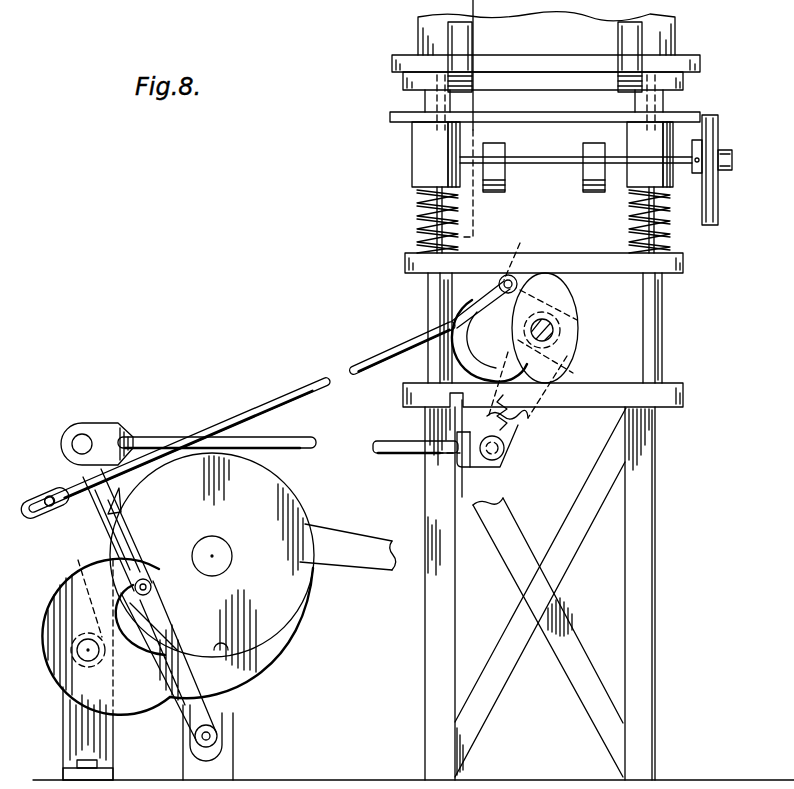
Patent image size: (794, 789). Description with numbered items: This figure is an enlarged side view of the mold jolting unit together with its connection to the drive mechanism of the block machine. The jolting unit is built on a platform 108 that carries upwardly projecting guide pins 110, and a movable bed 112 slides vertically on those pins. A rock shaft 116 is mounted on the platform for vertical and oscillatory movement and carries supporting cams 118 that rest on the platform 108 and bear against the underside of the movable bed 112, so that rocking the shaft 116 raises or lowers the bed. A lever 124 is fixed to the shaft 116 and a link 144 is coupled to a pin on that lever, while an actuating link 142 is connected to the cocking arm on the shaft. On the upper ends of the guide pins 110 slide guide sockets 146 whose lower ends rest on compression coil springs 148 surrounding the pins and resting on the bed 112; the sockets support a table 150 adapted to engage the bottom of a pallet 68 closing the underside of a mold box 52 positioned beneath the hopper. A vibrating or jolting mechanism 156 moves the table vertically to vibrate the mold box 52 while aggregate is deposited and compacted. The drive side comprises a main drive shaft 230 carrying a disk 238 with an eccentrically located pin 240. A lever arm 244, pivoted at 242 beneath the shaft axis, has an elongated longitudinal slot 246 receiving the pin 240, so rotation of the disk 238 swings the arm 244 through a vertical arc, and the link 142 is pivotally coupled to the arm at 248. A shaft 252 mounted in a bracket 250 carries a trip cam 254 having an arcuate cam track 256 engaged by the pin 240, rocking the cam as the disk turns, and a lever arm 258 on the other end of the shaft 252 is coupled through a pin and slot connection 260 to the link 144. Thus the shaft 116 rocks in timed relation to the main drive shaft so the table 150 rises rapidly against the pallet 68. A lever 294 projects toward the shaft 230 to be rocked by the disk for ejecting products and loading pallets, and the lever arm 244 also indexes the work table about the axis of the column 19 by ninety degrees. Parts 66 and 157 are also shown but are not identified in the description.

The column 19 is at (488, 5).
The mold box 52 is at (425, 35).
The pallet 68 is at (527, 65).
The guide post 66 is at (628, 43).
The table 150 is at (522, 80).
The guide sockets 146 is at (421, 150).
The roller 157 is at (585, 179).
The compression coil springs 148 is at (416, 216).
The vibrating or jolting mechanism 156 is at (720, 210).
The movable bed 112 is at (505, 262).
The guide pins 110 is at (428, 295).
The platform 108 is at (683, 393).
The supporting cams 118 is at (557, 302).
The rock shaft 116 is at (558, 325).
The lever 124 is at (500, 284).
The actuating link 142 is at (298, 438).
The link 144 is at (224, 424).
The pin and slot connection 260 is at (53, 494).
The pivot 248 is at (81, 440).
The disk 238 is at (287, 507).
The main drive shaft 230 is at (212, 548).
The lever 294 is at (353, 566).
The trip cam 254 is at (233, 682).
The arcuate cam track 256 is at (224, 649).
The lever arm 258 is at (56, 545).
The shaft 252 is at (80, 658).
The bracket 250 is at (72, 722).
The elongated longitudinal slot 246 is at (128, 527).
The eccentrically located pin 240 is at (158, 568).
The lever arm 244 is at (178, 624).
The pivot 242 is at (218, 736).